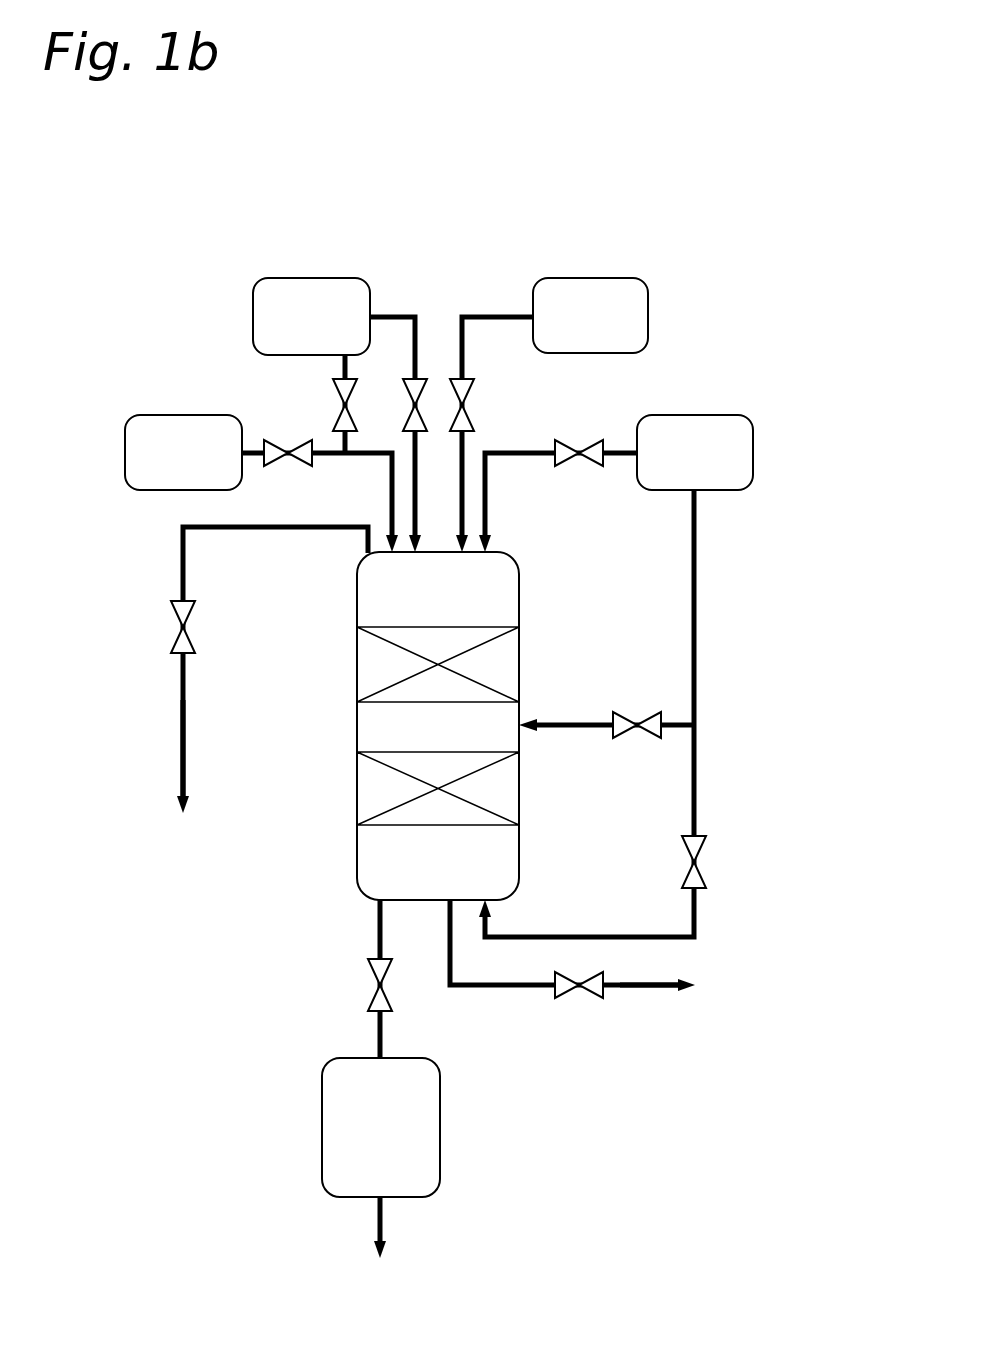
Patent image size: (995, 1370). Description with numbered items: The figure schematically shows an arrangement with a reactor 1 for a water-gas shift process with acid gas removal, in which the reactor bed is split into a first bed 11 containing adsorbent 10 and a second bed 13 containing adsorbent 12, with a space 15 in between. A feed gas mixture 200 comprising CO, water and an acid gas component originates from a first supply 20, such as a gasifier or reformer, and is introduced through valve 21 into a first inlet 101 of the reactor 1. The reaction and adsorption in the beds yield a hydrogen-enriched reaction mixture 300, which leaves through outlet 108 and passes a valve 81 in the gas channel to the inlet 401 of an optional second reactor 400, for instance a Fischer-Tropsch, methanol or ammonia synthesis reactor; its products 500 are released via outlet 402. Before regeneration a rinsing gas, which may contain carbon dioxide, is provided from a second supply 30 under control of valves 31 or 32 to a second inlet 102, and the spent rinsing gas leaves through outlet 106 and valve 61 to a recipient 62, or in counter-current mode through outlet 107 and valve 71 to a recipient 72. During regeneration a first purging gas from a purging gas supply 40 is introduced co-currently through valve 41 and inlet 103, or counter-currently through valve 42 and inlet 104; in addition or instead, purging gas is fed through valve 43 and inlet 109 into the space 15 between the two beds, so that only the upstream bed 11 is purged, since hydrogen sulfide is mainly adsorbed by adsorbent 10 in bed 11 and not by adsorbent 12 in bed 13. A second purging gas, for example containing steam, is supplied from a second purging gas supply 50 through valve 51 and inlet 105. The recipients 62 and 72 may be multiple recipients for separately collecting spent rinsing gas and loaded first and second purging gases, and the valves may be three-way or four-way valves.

The reactor 1 is at (298, 729).
The adsorbent 10 is at (382, 675).
The first bed 11 is at (405, 708).
The adsorbent 12 is at (382, 803).
The second bed 13 is at (405, 842).
The space 15 is at (380, 733).
The first supply 20 is at (181, 408).
The valve 21 is at (283, 455).
The second supply 30 is at (308, 268).
The valve 31 is at (418, 402).
The valve 32 is at (348, 398).
The purging gas supply 40 is at (683, 408).
The valve 41 is at (572, 458).
The valve 42 is at (700, 872).
The valve 43 is at (632, 730).
The second purging gas supply 50 is at (600, 270).
The valve 51 is at (465, 415).
The valve 61 is at (570, 990).
The recipient 62 is at (630, 988).
The valve 71 is at (187, 645).
The recipient 72 is at (180, 742).
The valve 81 is at (382, 980).
The first inlet 101 is at (387, 556).
The second inlet 102 is at (420, 556).
The inlet 103 is at (487, 553).
The inlet 104 is at (485, 900).
The inlet 105 is at (462, 556).
The outlet 106 is at (450, 900).
The outlet 107 is at (368, 555).
The outlet 108 is at (378, 900).
The inlet 109 is at (515, 725).
The gas mixture 200 is at (507, 615).
The reaction mixture 300 is at (510, 843).
The second reactor 400 is at (318, 1142).
The inlet 401 is at (380, 1058).
The outlet 402 is at (382, 1197).
The products 500 is at (380, 1227).